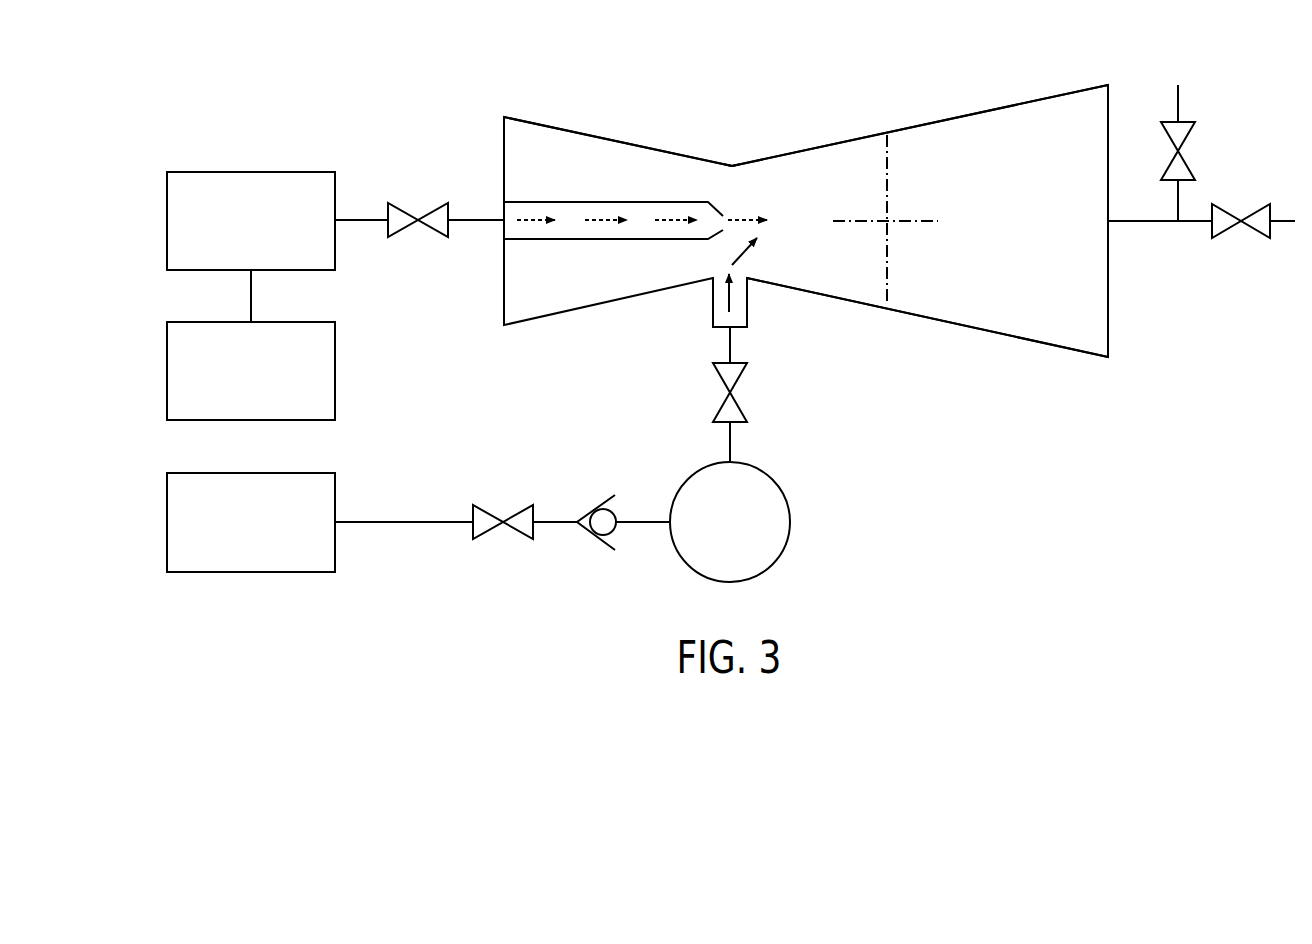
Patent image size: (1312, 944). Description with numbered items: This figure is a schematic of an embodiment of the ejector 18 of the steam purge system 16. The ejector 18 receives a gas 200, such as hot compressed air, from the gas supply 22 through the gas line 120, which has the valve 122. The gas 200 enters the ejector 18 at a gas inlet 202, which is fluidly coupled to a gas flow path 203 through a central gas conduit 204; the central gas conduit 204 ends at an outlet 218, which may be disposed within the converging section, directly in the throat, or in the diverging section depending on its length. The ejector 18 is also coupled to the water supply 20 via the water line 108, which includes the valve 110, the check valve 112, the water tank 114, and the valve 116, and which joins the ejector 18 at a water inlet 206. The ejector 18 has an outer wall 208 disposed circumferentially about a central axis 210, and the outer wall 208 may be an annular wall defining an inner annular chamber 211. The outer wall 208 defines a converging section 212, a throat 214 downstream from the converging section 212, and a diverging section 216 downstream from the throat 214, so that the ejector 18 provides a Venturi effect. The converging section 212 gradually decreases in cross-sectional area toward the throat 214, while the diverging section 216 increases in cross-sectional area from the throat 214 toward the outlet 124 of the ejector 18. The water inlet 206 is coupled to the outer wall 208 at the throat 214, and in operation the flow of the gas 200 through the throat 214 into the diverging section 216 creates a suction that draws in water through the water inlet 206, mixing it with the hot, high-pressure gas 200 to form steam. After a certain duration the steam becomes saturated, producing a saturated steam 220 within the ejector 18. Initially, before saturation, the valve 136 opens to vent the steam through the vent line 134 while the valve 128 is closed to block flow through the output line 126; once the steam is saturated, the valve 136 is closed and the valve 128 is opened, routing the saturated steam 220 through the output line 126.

The steam purge system 16 is at (395, 77).
The ejector 18 is at (910, 425).
The water supply 20 is at (167, 522).
The gas supply 22 is at (167, 372).
The water line 108 is at (420, 522).
The valve 110 is at (515, 533).
The check valve 112 is at (593, 535).
The water tank 114 is at (773, 472).
The valve 116 is at (740, 380).
The gas line 120 is at (360, 218).
The valve 122 is at (430, 227).
The outlet 124 is at (1108, 333).
The output line 126 is at (1147, 223).
The valve 128 is at (1255, 233).
The vent line 134 is at (1178, 103).
The valve 136 is at (1185, 138).
The gas 200 is at (167, 222).
The gas inlet 202 is at (502, 228).
The gas flow path 203 is at (532, 238).
The central gas conduit 204 is at (620, 202).
The water inlet 206 is at (712, 298).
The outer wall 208 is at (532, 122).
The central axis 210 is at (915, 221).
The inner annular chamber 211 is at (811, 150).
The converging section 212 is at (618, 141).
The throat 214 is at (731, 165).
The diverging section 216 is at (995, 110).
The outlet 218 is at (725, 218).
The saturated steam 220 is at (1007, 276).